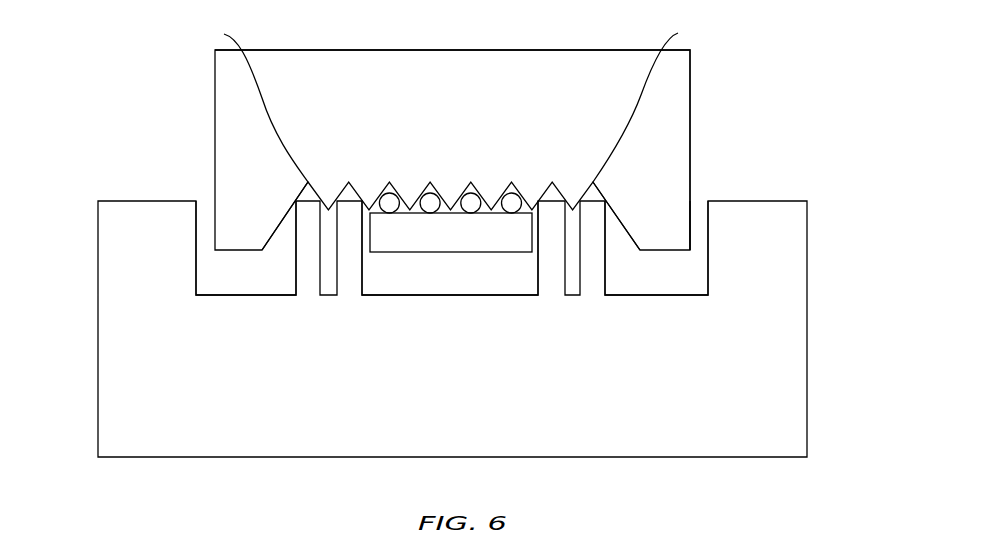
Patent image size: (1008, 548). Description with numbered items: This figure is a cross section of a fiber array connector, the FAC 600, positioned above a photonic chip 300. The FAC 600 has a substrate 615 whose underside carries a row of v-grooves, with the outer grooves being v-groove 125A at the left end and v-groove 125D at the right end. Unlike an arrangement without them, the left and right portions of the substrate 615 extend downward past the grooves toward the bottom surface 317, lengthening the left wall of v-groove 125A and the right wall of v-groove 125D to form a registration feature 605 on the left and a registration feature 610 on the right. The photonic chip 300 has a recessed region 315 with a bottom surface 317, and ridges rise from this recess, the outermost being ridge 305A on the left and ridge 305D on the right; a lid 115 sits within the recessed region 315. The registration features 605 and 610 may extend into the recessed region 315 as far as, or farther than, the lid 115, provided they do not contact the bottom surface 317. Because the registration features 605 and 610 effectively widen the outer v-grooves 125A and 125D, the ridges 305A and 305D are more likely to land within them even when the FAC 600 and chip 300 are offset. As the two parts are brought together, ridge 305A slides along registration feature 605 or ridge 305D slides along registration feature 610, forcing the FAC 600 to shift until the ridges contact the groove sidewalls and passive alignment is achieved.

The fiber array connector (FAC) 600 is at (457, 50).
The substrate 615 is at (473, 118).
The v-groove 125A is at (236, 101).
The v-groove 125D is at (665, 101).
The registration feature 605 is at (272, 222).
The registration feature 610 is at (618, 212).
The photonic chip 300 is at (472, 436).
The ridge 305A is at (296, 257).
The ridge 305D is at (605, 257).
The recessed region 315 is at (693, 260).
The bottom surface 317 is at (450, 300).
The lid 115 is at (468, 243).